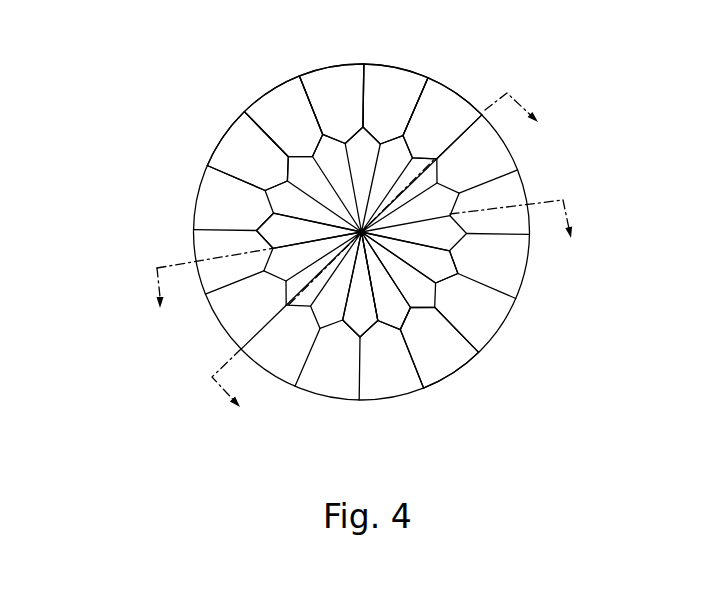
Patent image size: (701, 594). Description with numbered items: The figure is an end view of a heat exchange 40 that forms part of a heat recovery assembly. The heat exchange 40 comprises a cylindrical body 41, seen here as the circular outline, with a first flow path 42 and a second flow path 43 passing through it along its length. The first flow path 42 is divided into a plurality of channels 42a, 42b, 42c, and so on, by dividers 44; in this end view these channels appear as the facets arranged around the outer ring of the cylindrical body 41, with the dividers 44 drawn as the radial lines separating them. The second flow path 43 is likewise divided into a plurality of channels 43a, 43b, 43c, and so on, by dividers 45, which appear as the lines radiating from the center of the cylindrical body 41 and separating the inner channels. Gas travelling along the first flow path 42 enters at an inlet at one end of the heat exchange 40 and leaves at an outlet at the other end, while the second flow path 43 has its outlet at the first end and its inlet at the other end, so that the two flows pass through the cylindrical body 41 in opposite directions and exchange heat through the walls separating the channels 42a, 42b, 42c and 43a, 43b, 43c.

The heat exchange 40 is at (304, 227).
The cylindrical body 41 is at (232, 126).
The first flow path 42 is at (287, 115).
The channel 42a is at (330, 87).
The channel 42b is at (388, 87).
The channel 42c is at (447, 105).
The second flow path 43 is at (432, 265).
The channel 43a is at (440, 312).
The channel 43b is at (390, 310).
The channel 43c is at (355, 320).
The dividers 44 is at (228, 177).
The dividers 45 is at (287, 222).